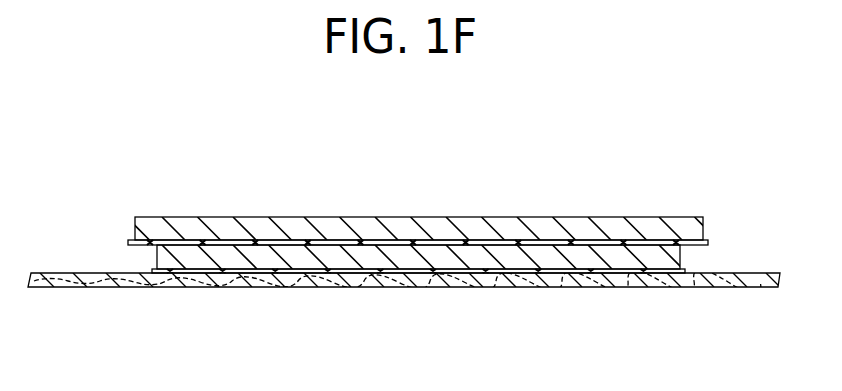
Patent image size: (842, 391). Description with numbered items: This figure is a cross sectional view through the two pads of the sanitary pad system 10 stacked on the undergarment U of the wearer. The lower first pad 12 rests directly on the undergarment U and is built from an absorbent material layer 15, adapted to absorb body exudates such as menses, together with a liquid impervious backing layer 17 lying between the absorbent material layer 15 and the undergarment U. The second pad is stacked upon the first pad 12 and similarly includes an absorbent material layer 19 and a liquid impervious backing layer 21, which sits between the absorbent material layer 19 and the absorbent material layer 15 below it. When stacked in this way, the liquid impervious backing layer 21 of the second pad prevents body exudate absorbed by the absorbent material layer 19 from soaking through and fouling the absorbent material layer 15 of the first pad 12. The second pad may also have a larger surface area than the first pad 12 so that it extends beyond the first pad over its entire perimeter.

The sanitary pad system 10 is at (232, 163).
The first pad 12 is at (692, 260).
The absorbent material layer 15 is at (347, 255).
The liquid impervious backing layer 17 is at (212, 272).
The absorbent material layer 19 is at (505, 228).
The liquid impervious backing layer 21 is at (537, 243).
The undergarment U is at (82, 283).